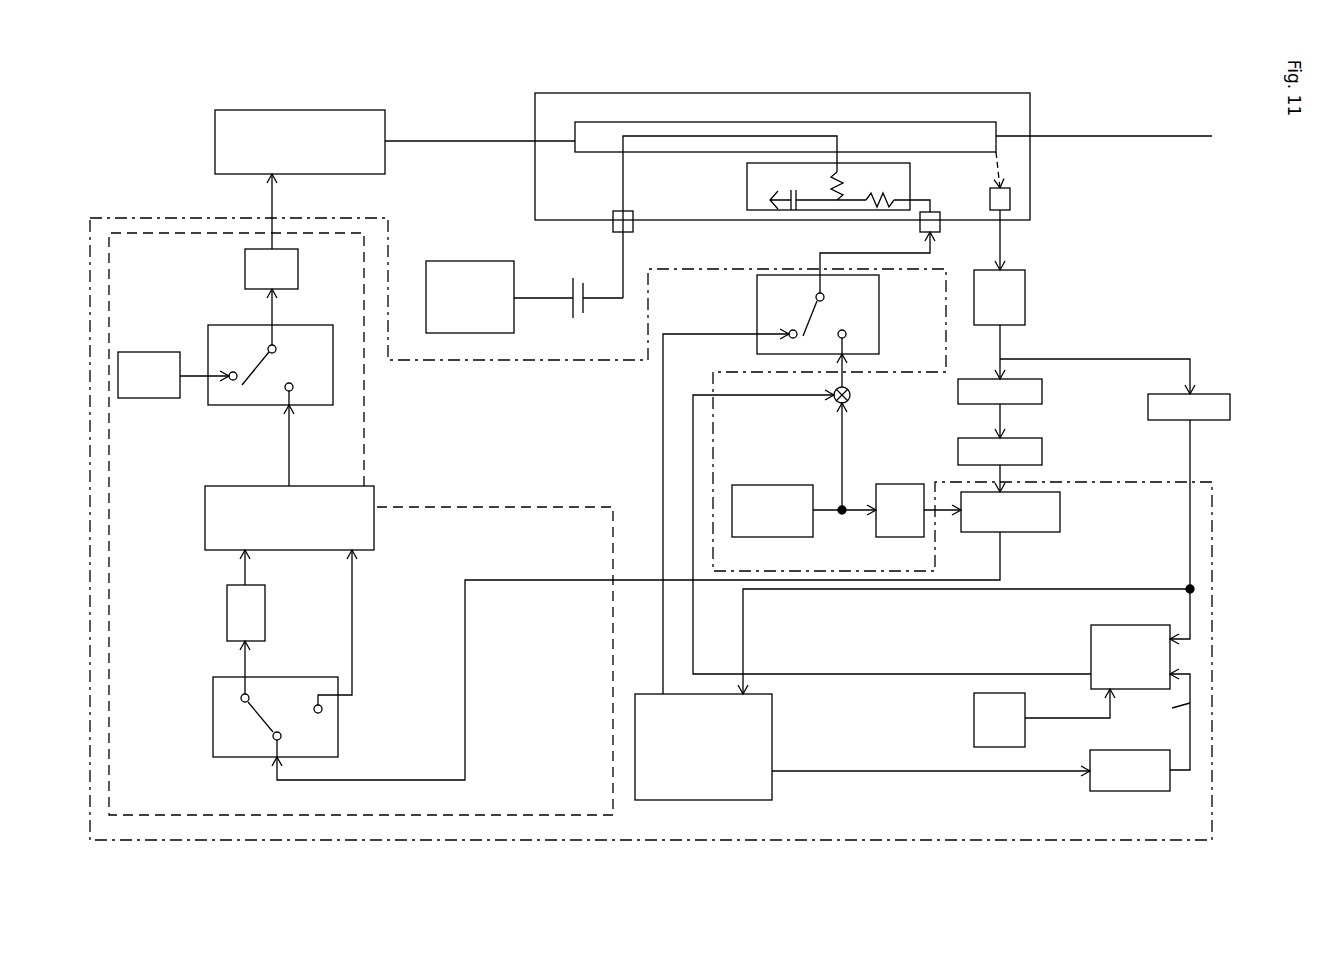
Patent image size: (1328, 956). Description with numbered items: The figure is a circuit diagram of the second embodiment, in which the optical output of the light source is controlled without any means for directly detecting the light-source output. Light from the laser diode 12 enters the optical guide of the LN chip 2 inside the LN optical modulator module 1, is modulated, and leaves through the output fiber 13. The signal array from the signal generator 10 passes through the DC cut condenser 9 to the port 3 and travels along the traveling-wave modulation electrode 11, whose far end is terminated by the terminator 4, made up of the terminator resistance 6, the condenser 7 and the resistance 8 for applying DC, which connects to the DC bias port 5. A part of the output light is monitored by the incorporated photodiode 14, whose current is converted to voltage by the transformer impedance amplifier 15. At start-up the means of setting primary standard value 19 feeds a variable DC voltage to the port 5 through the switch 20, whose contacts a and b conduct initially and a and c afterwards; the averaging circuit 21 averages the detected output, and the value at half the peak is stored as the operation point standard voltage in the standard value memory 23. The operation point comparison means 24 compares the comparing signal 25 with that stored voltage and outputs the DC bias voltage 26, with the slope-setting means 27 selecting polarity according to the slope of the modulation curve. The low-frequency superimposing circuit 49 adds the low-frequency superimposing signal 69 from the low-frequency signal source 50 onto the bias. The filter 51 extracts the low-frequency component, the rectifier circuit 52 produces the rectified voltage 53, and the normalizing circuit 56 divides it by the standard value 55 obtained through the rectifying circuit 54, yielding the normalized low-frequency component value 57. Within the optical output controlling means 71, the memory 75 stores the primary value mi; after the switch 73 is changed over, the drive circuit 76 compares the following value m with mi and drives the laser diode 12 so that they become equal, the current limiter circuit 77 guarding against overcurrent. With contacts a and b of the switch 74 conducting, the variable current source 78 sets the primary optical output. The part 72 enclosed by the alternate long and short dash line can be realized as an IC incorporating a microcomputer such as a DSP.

The LN optical modulator module 1 is at (545, 112).
The LN chip 2 is at (955, 135).
The port 3 is at (633, 224).
The terminator 4 is at (747, 195).
The port 5 is at (935, 222).
The terminator resistance 6 is at (833, 188).
The condenser 7 is at (787, 202).
The resistance for applying DC 8 is at (873, 207).
The condenser 9 is at (578, 308).
The signal generator 10 is at (462, 275).
The modulation electrode 11 is at (640, 143).
The laser diode 12 is at (358, 158).
The output fiber 13 is at (1133, 140).
The photodiode 14 is at (1010, 198).
The transformer impedance amplifier 15 is at (1025, 293).
The means of setting primary standard value 19 is at (750, 739).
The switch 20 is at (770, 293).
The averaging circuit 21 is at (1170, 408).
The standard value memory 23 is at (1118, 778).
The operation point comparison means 24 is at (1110, 653).
The comparing signal 25 is at (1186, 606).
The DC bias voltage 26 is at (898, 674).
The slope-setting means 27 is at (988, 720).
The low-frequency superimposing circuit 49 is at (850, 400).
The low-frequency signal source 50 is at (750, 505).
The filter 51 is at (1020, 395).
The rectifier circuit 52 is at (1025, 450).
The rectified voltage 53 is at (1000, 473).
The rectifying circuit 54 is at (897, 500).
The standard value 55 is at (942, 514).
The normalizing circuit 56 is at (1045, 508).
The normalized low-frequency component value 57 is at (465, 736).
The low-frequency superimposing signal 69 is at (838, 450).
The optical output controlling means 71 is at (345, 795).
The enclosed part 72 is at (815, 836).
The switch 73 is at (225, 736).
The switch 74 is at (250, 390).
The memory 75 is at (245, 615).
The drive circuit 76 is at (225, 520).
The current limiter circuit 77 is at (245, 268).
The variable current source 78 is at (140, 385).